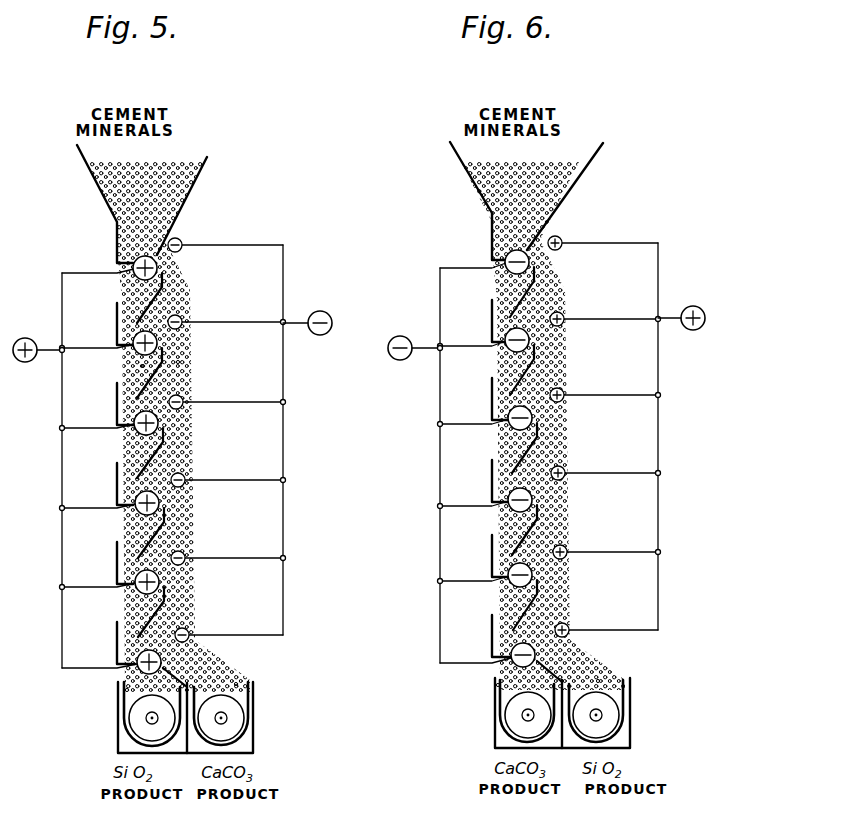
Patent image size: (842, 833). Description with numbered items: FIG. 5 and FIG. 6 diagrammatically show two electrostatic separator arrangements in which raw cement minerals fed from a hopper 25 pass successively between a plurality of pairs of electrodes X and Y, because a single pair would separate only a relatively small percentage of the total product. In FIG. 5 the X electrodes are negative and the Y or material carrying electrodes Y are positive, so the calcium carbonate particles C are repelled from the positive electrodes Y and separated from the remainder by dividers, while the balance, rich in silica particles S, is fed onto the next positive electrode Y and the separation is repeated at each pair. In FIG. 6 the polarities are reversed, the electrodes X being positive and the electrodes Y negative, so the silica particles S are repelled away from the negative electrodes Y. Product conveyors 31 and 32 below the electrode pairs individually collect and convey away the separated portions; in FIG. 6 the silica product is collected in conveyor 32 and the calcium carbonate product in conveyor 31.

In FIG. 5, the feed hopper for cement minerals 25 is at (175, 219).
In FIG. 6, the feed hopper for cement minerals 25 is at (552, 217).
In FIG. 5, the product conveyor 31 is at (110, 728).
In FIG. 6, the product conveyor 31 is at (488, 727).
In FIG. 5, the product conveyor 32 is at (261, 722).
In FIG. 6, the product conveyor 32 is at (633, 720).
In FIG. 5, the electrodes X is at (182, 240).
In FIG. 6, the electrodes X is at (562, 236).
In FIG. 5, the material carrying electrodes Y is at (133, 275).
In FIG. 6, the material carrying electrodes Y is at (506, 271).
In FIG. 5, the silica (SiO2) particles S is at (143, 368).
In FIG. 6, the silica (SiO2) particles S is at (604, 681).
In FIG. 5, the calcium carbonate (CaCO3) particles C is at (180, 368).
In FIG. 6, the calcium carbonate (CaCO3) particles C is at (503, 689).